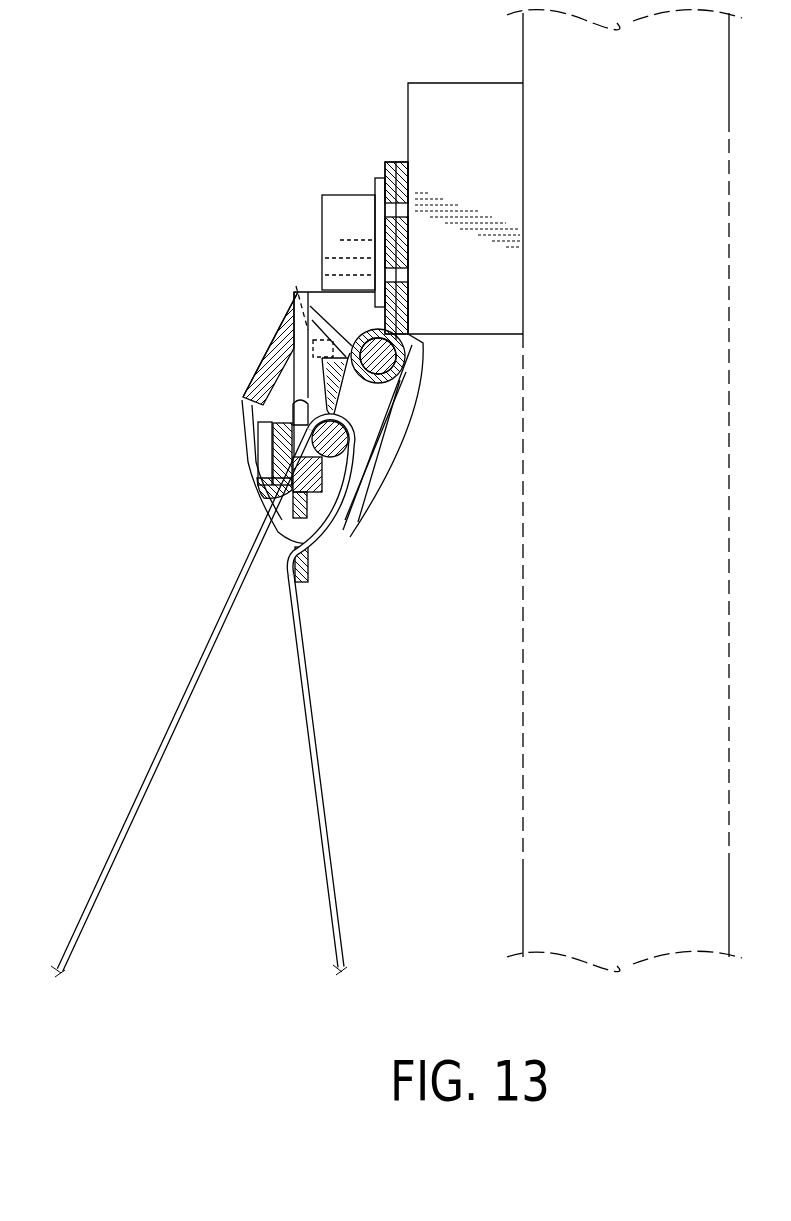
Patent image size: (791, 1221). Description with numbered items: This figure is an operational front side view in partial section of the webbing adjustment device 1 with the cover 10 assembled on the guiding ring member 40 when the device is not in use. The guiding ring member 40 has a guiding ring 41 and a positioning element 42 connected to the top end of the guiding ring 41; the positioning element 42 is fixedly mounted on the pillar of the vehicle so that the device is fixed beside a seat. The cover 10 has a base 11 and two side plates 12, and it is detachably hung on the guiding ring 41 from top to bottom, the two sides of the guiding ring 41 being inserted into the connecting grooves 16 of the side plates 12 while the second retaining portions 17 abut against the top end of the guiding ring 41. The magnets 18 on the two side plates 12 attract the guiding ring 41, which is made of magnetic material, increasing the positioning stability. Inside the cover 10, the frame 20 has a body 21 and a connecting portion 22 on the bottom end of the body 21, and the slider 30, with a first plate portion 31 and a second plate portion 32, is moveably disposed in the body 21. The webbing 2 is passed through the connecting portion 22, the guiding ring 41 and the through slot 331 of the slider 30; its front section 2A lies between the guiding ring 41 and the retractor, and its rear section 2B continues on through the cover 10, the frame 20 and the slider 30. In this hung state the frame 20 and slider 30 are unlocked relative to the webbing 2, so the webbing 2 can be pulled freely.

The webbing adjustment device 1 is at (220, 272).
The webbing 2 is at (228, 697).
The front section 2A is at (314, 774).
The rear section 2B is at (172, 734).
The cover 10 is at (312, 430).
The base 11 is at (263, 367).
The side plates 12 is at (412, 392).
The connecting groove 16 is at (383, 454).
The second retaining portion 17 is at (366, 322).
The magnets 18 is at (296, 286).
The frame 20 is at (316, 352).
The body 21 is at (300, 410).
The connecting portion 22 is at (307, 573).
The slider 30 is at (359, 504).
The first plate portion 31 is at (283, 447).
The second plate portion 32 is at (335, 540).
The guiding ring member 40 is at (417, 397).
The guiding ring 41 is at (363, 403).
The positioning element 42 is at (385, 163).
The through slot 331 is at (263, 503).